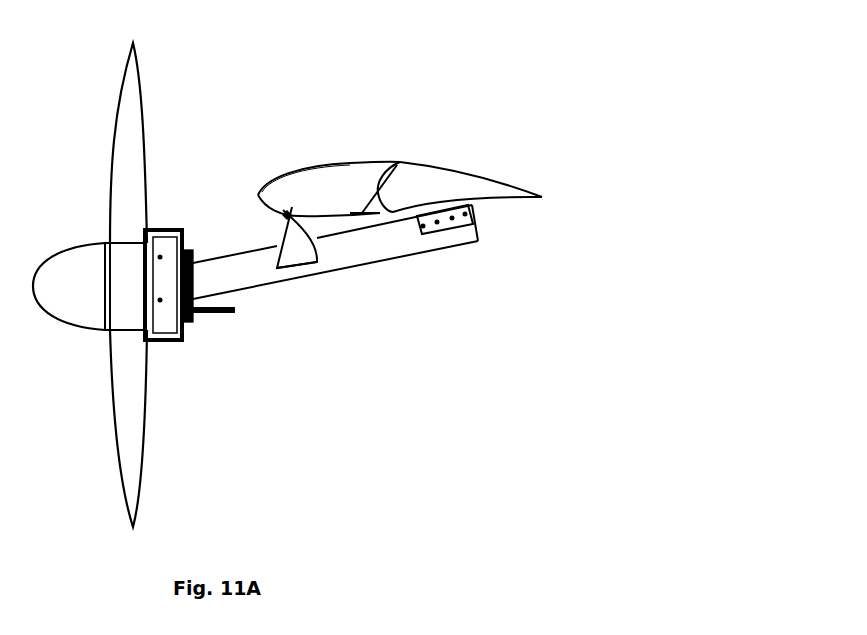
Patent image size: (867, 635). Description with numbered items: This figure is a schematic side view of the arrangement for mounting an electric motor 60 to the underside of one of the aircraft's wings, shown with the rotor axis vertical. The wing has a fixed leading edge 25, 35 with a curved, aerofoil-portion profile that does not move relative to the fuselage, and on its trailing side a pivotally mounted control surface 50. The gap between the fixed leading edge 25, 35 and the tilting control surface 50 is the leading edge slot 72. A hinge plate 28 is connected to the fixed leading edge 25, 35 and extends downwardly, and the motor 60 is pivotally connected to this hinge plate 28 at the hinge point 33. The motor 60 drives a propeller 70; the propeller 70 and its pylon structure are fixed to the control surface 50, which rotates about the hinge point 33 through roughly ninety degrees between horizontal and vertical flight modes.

The fixed leading edge 25 is at (325, 161).
The fixed leading edge 35 is at (306, 178).
The leading edge slot 72 is at (399, 161).
The control surface 50 is at (475, 173).
The hinge point 33 is at (289, 232).
The hinge plate 28 is at (309, 263).
The electric motor 60 is at (394, 260).
The propeller 70 is at (150, 372).